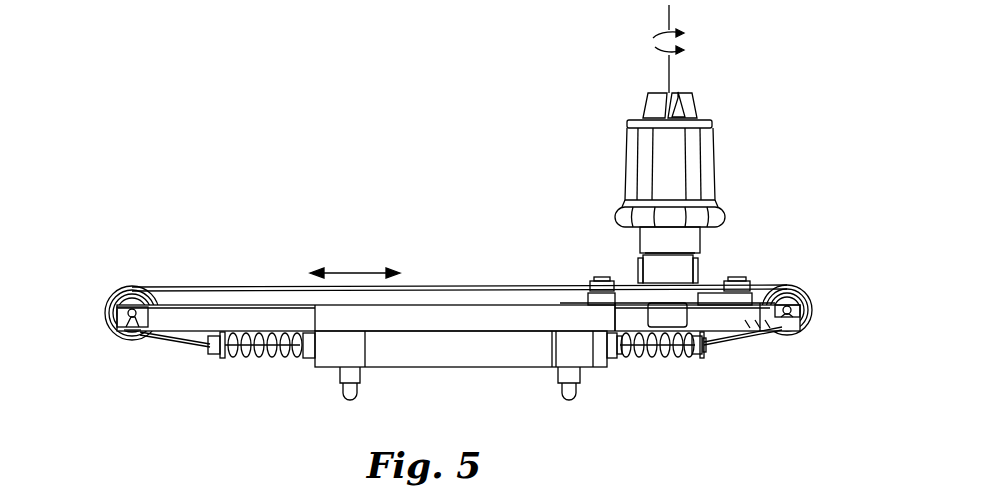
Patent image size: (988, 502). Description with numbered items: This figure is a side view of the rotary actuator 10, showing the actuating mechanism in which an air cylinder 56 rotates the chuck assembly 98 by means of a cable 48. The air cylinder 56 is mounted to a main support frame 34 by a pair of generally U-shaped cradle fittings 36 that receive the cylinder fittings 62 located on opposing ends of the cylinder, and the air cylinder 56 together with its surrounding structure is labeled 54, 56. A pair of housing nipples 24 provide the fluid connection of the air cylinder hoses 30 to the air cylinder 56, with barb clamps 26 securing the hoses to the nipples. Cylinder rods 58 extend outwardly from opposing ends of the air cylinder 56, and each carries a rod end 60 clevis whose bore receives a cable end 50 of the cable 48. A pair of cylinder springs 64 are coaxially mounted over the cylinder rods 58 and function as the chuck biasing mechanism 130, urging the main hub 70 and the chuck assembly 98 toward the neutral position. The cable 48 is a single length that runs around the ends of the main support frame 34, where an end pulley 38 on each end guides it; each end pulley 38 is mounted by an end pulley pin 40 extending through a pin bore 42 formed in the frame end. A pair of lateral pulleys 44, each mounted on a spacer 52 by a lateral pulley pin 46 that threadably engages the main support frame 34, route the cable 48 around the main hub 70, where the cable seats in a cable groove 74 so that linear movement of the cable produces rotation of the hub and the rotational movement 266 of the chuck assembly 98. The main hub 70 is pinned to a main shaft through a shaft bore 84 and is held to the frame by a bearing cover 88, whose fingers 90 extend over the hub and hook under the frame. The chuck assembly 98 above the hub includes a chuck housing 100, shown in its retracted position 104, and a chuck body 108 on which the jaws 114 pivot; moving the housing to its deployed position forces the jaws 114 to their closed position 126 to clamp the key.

The rotary actuator 10 is at (214, 208).
The housing nipples 24 is at (361, 376).
The barb clamps 26 is at (459, 406).
The air cylinder hoses 30 is at (356, 396).
The main support frame 34 is at (187, 312).
The cradle fittings 36 is at (459, 392).
The end pulley 38 is at (106, 317).
The end pulley pin 40 is at (129, 320).
The pin bore 42 is at (136, 327).
The lateral pulleys 44 is at (588, 286).
The lateral pulley pin 46 is at (600, 278).
The cable 48 is at (283, 289).
The cable end 50 is at (208, 346).
The spacer 52 is at (590, 298).
The housing 54 is at (461, 349).
The air cylinder 56 is at (461, 349).
The cylinder rods 58 is at (280, 359).
The rod end 60 is at (215, 358).
The cylinder fittings 62 is at (311, 360).
The cylinder springs 64 is at (258, 358).
The main hub 70 is at (731, 255).
The cable groove 74 is at (700, 272).
The shaft bore 84 is at (638, 235).
The bearing cover 88 is at (700, 262).
The fingers 90 is at (645, 356).
The chuck assembly 98 is at (736, 132).
The chuck housing 100 is at (611, 157).
The retracted position 104 is at (628, 140).
The chuck body 108 is at (625, 220).
The jaws 114 is at (716, 87).
The closed position 126 is at (670, 93).
The chuck biasing mechanism 130 is at (451, 409).
The rotational movement 266 is at (660, 44).